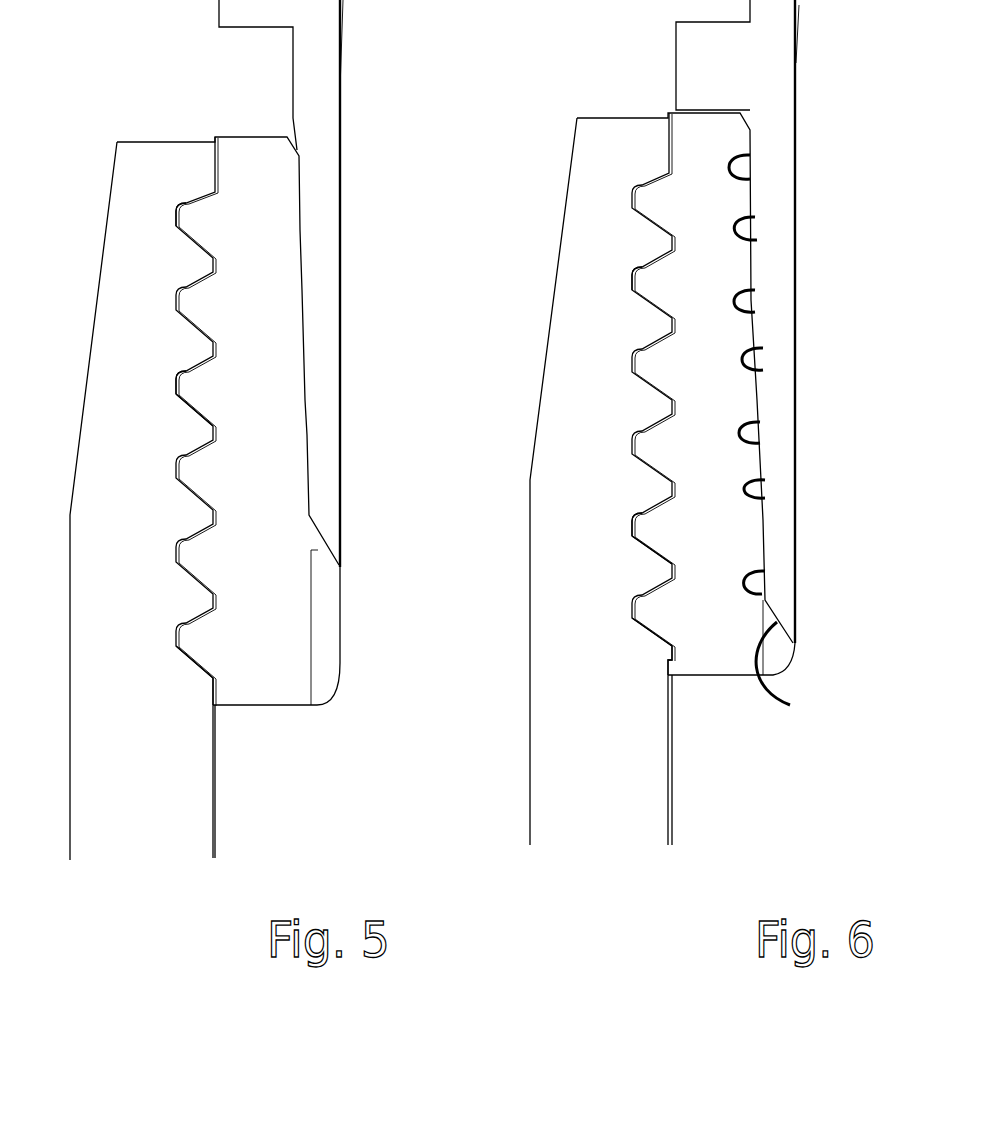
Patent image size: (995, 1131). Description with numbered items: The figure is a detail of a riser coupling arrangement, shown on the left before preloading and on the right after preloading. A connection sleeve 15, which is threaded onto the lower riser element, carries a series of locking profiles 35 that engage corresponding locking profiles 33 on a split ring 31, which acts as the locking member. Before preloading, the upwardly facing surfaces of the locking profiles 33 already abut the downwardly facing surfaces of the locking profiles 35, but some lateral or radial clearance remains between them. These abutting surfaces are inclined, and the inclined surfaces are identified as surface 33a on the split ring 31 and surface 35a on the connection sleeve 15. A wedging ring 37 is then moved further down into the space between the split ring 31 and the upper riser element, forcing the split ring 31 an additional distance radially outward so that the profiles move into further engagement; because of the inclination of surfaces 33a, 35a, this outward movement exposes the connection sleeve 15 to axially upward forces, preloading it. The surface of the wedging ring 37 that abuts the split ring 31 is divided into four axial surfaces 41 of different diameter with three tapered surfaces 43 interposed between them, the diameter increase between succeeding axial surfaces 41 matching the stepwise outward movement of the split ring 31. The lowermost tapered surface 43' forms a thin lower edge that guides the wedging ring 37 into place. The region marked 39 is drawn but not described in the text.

In FIG. 5, the connection sleeve 15 is at (167, 834).
In FIG. 6, the connection sleeve 15 is at (560, 813).
In FIG. 5, the split ring 31 is at (243, 517).
In FIG. 5, the locking profiles of the split ring 33 is at (207, 333).
In FIG. 6, the locking profiles of the split ring 33 is at (662, 308).
In FIG. 5, the inclined surface of the split ring locking profile 33a is at (200, 368).
In FIG. 6, the inclined surface of the split ring locking profile 33a is at (655, 498).
In FIG. 5, the locking profiles of the connection sleeve 35 is at (202, 247).
In FIG. 6, the locking profiles of the connection sleeve 35 is at (645, 292).
In FIG. 5, the inclined surface of the connection sleeve locking profile 35a is at (193, 368).
In FIG. 6, the inclined surface of the connection sleeve locking profile 35a is at (655, 498).
In FIG. 5, the wedging ring 37 is at (318, 101).
In FIG. 6, the wedging ring 37 is at (768, 79).
In FIG. 5, the thread run-out 39 is at (257, 703).
In FIG. 6, the thread run-out 39 is at (713, 673).
In FIG. 6, the axial surfaces 41 is at (750, 179).
In FIG. 6, the tapered surfaces 43 is at (814, 362).
In FIG. 6, the lowermost tapered surface 43' is at (818, 679).